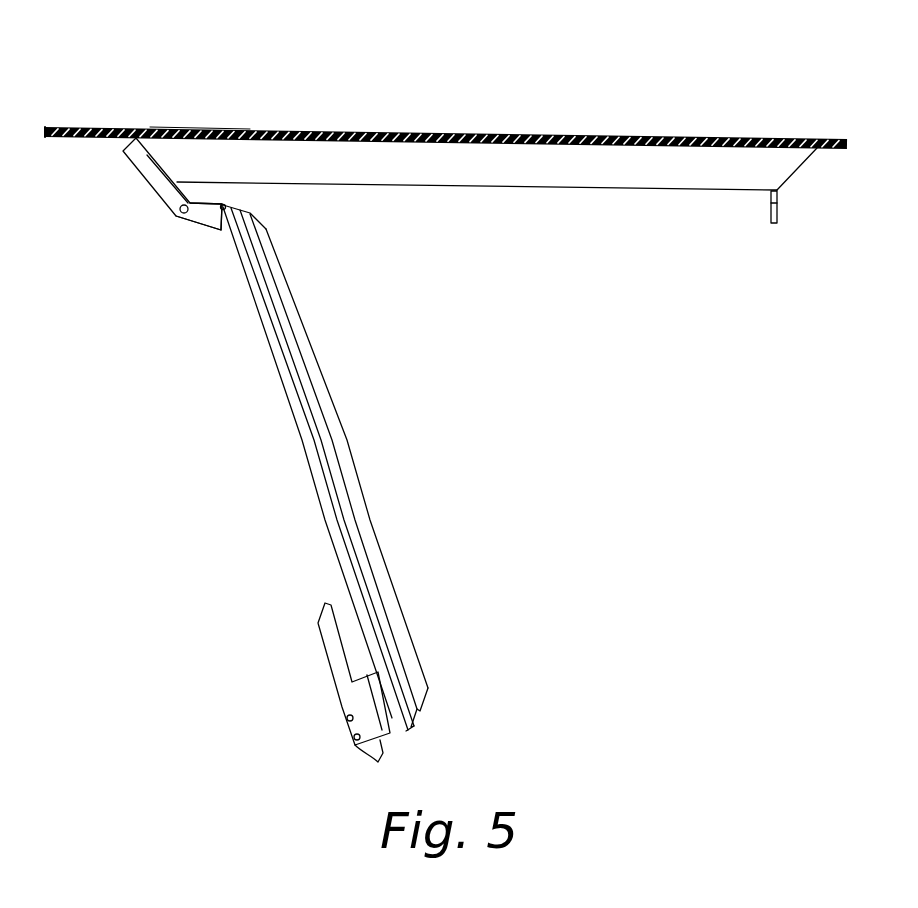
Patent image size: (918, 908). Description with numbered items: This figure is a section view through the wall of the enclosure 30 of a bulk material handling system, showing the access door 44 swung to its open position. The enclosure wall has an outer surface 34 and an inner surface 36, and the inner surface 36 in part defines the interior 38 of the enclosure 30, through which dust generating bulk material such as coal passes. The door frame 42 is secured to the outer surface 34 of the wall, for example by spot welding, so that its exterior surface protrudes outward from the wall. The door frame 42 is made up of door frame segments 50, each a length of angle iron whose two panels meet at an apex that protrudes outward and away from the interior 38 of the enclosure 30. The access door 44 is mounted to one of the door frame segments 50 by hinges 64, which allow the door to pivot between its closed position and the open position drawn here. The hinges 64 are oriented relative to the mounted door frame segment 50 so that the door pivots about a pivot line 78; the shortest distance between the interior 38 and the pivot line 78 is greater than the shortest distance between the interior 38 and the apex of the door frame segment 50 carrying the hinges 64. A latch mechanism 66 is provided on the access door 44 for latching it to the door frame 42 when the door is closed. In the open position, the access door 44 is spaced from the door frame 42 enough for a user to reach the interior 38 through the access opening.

The enclosure 30 is at (97, 165).
The outer surface 34 is at (70, 138).
The inner surface 36 is at (164, 125).
The interior 38 is at (406, 78).
The door frame 42 is at (694, 192).
The access door 44 is at (316, 498).
The door frame segment 50 is at (610, 177).
The hinge 64 is at (217, 224).
The latch mechanism 66 is at (340, 706).
The pivot line 78 is at (184, 215).